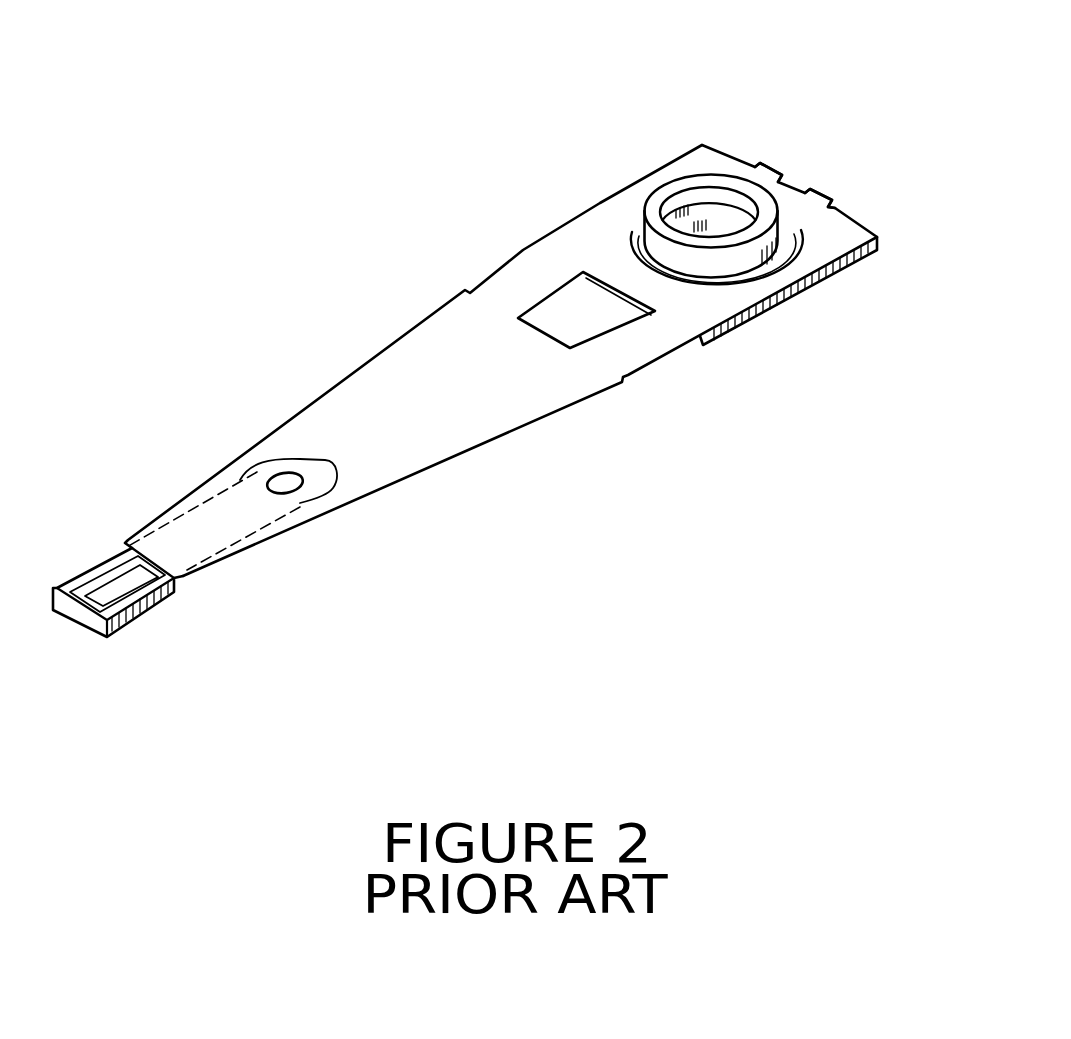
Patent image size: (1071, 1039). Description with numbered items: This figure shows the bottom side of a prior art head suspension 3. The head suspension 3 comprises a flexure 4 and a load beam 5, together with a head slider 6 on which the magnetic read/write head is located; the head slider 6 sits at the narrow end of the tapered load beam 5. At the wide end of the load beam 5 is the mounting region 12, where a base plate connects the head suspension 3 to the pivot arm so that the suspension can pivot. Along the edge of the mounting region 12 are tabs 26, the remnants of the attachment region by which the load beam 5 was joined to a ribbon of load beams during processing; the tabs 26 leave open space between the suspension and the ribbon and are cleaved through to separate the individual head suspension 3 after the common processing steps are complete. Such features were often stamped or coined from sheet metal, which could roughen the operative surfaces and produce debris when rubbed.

The head suspension 3 is at (567, 142).
The flexure 4 is at (243, 520).
The load beam 5 is at (343, 373).
The head slider 6 is at (80, 613).
The mounting region 12 is at (705, 162).
The tabs 26 is at (775, 168).